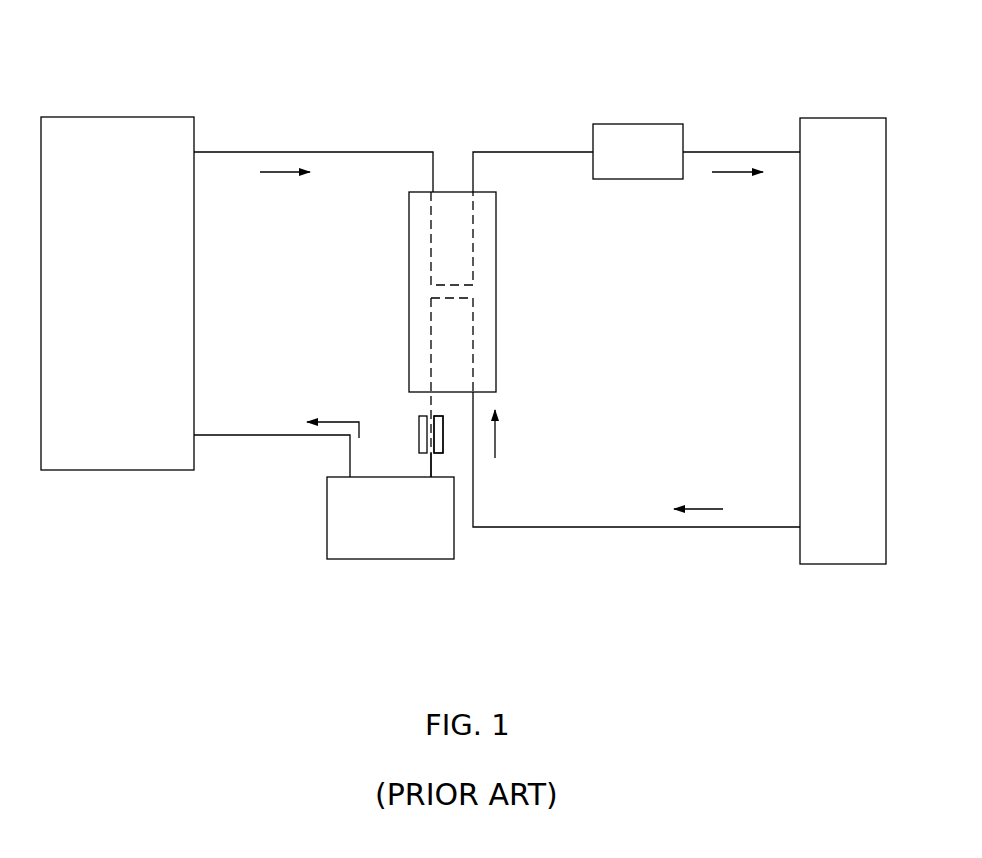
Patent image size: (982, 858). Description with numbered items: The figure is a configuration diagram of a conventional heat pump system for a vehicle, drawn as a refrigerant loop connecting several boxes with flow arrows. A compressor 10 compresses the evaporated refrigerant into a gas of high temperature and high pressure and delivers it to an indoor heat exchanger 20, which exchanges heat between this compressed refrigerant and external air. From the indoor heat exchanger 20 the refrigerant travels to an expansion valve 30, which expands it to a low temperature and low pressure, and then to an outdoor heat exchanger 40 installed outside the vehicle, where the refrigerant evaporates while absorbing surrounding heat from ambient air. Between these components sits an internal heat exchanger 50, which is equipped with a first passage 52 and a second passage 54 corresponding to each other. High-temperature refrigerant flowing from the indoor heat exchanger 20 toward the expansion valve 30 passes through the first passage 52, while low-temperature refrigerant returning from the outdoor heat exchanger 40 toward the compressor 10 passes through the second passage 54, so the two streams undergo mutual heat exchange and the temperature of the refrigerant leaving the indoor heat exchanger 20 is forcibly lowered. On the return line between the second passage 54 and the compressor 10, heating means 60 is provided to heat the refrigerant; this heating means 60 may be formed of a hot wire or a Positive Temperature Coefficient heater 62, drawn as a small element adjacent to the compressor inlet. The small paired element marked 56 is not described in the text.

The compressor 10 is at (405, 560).
The indoor heat exchanger 20 is at (164, 117).
The expansion valve 30 is at (637, 124).
The outdoor heat exchanger 40 is at (843, 118).
The internal heat exchanger 50 is at (496, 292).
The first passage 52 is at (452, 287).
The second passage 54 is at (452, 298).
The oil return hole 56 is at (418, 425).
The heating means 60 is at (448, 455).
The PTC heater 62 is at (440, 416).